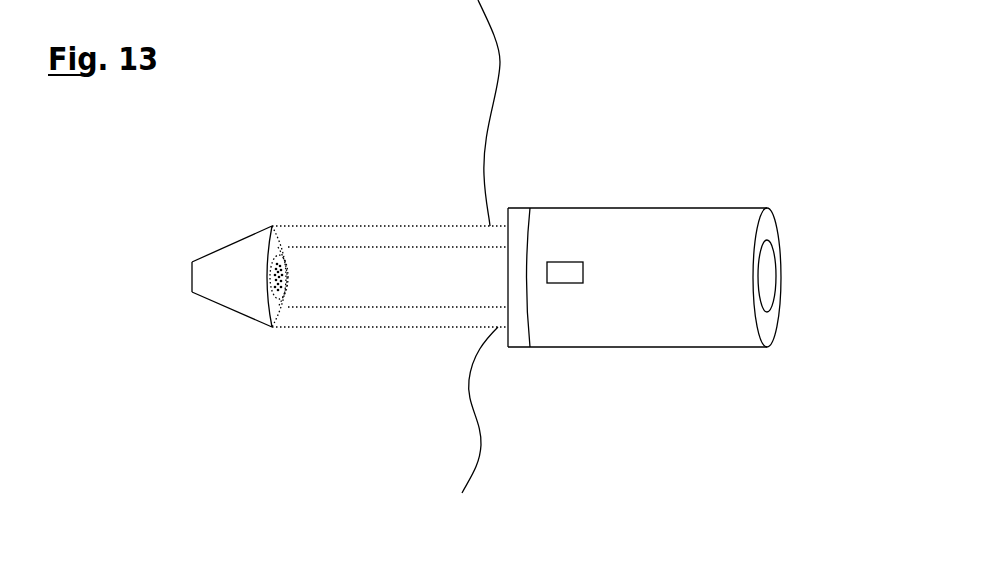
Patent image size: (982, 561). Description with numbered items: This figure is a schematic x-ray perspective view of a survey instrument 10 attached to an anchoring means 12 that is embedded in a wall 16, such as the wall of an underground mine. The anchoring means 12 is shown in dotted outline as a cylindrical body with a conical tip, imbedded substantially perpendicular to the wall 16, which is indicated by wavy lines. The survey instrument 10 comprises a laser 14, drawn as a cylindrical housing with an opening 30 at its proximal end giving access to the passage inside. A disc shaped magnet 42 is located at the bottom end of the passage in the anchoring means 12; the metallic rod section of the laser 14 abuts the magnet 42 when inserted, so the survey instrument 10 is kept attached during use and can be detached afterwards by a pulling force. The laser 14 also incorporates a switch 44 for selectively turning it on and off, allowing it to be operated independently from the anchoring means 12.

The survey instrument 10 is at (558, 364).
The anchoring means 12 is at (320, 215).
The laser 14 is at (670, 308).
The wall 16 is at (500, 60).
The opening 30 is at (767, 277).
The magnet 42 is at (280, 277).
The switch 44 is at (565, 262).